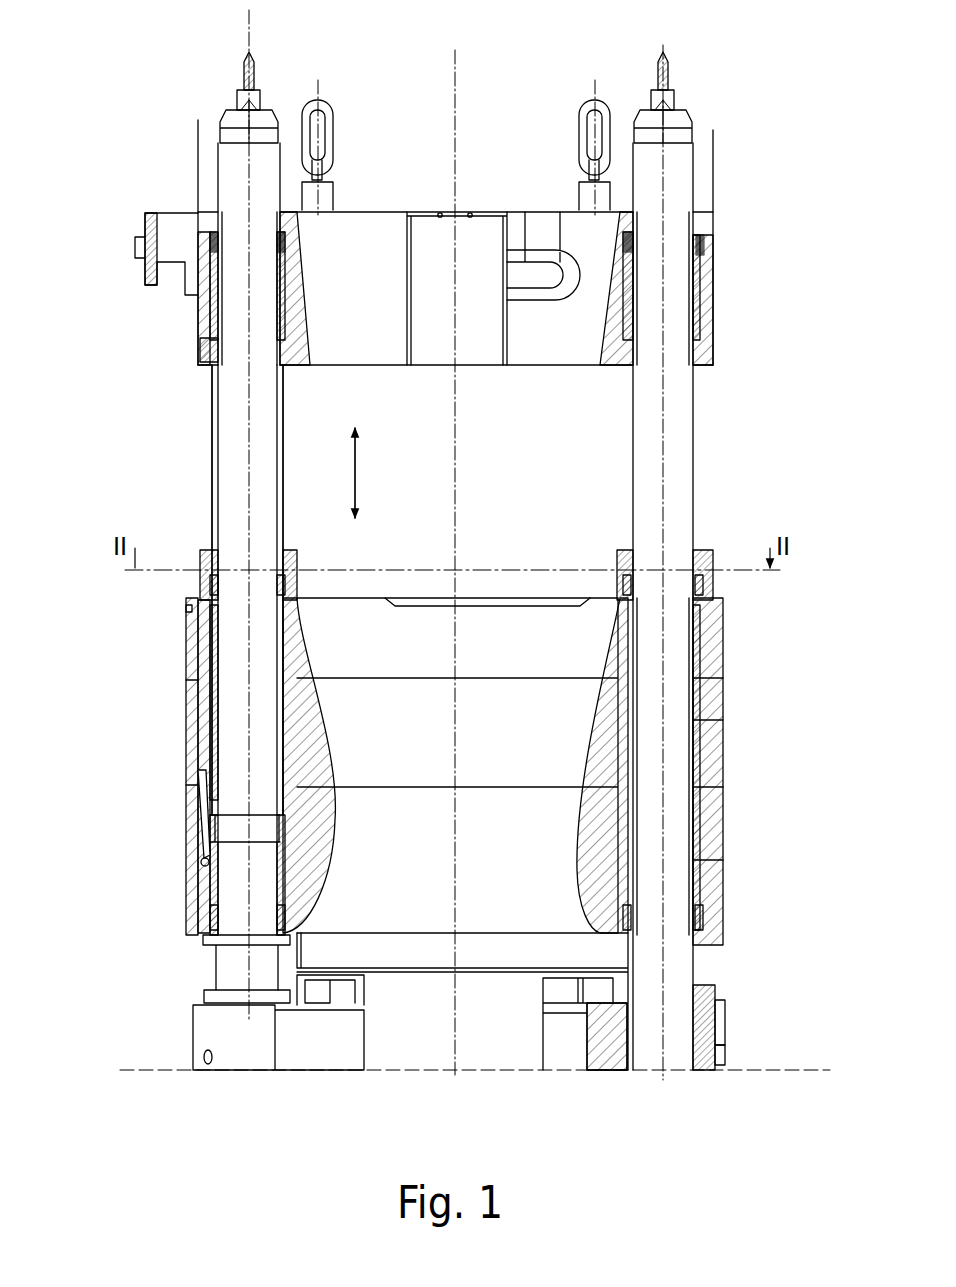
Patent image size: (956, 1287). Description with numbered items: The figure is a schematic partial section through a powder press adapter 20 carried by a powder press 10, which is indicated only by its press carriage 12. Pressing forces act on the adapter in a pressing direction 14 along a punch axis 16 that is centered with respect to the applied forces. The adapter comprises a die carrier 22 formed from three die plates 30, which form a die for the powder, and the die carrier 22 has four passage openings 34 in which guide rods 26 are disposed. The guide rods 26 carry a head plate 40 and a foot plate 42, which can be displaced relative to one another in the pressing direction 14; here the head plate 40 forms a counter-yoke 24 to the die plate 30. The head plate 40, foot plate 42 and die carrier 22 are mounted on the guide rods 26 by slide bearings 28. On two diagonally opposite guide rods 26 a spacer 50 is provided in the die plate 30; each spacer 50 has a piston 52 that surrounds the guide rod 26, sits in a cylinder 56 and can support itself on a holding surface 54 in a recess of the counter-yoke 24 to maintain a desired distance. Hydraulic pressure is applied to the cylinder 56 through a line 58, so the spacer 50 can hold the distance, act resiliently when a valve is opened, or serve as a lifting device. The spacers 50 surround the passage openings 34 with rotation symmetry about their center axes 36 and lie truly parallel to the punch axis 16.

The powder press 10 is at (742, 74).
The press carriage 12 is at (703, 190).
The pressing direction 14 is at (355, 475).
The punch axis 16 is at (455, 57).
The powder press adapter 20 is at (722, 1092).
The die carrier 22 is at (180, 548).
The counter-yoke 24 is at (345, 268).
The guide rods 26 is at (268, 185).
The slide bearings 28 is at (200, 318).
The die plates 30 is at (720, 672).
The passage openings 34 is at (205, 207).
The center axes 36 is at (248, 58).
The head plate 40 is at (708, 288).
The foot plate 42 is at (263, 1050).
The spacer 50 is at (198, 490).
The piston 52 is at (212, 372).
The holding surface 54 is at (200, 350).
The cylinder 56 is at (200, 690).
The line 58 is at (200, 852).